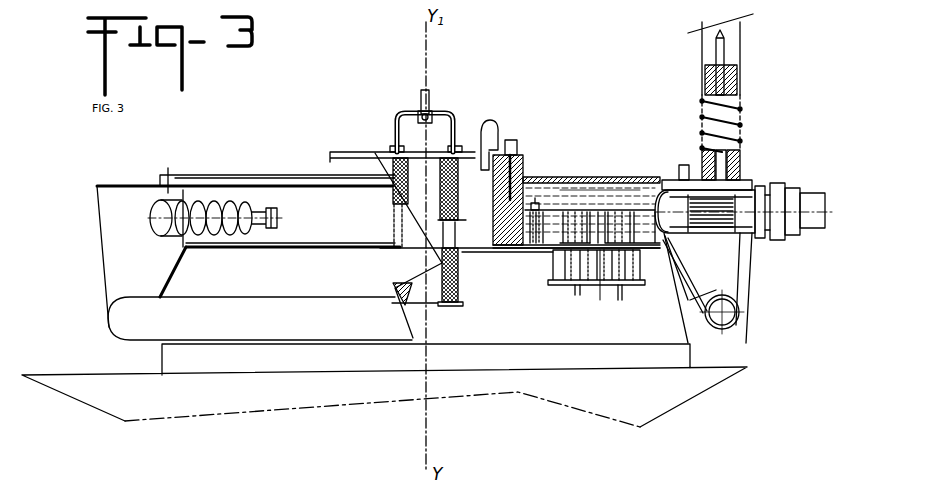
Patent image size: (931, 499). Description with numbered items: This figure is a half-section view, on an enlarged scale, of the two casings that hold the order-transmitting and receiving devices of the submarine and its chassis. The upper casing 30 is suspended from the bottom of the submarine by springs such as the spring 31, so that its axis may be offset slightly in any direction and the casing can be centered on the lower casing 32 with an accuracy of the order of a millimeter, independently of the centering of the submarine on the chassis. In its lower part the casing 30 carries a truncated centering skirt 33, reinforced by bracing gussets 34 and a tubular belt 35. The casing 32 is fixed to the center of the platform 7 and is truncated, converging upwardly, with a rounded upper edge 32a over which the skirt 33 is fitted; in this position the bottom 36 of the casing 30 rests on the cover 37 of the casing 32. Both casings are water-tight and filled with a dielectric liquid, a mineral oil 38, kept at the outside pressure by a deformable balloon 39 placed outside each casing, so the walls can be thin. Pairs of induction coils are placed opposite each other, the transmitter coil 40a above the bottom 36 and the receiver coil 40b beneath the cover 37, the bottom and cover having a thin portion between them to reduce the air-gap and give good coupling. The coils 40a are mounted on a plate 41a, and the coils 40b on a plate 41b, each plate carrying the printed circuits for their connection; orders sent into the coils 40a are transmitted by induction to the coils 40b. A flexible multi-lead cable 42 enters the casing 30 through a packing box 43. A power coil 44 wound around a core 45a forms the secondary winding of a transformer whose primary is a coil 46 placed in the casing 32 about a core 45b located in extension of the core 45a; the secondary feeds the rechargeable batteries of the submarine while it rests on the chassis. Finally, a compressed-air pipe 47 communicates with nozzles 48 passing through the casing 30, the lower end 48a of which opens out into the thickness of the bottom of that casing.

The platform 7 is at (58, 372).
The casing 30 is at (597, 242).
The spring 31 is at (742, 128).
The casing 32 is at (523, 340).
The upper edge 32a is at (662, 244).
The centering skirt 33 is at (690, 283).
The bracing gussets 34 is at (728, 267).
The tubular belt 35 is at (738, 320).
The bottom 36 is at (628, 188).
The cover 37 is at (602, 270).
The mineral oil 38 is at (598, 190).
The deformable balloon 39 is at (160, 223).
The induction coil 40a is at (574, 210).
The induction coil 40b is at (560, 262).
The plate 41a is at (545, 203).
The plate 41b is at (580, 283).
The flexible multi-lead cable 42 is at (815, 200).
The packing box 43 is at (778, 185).
The power coil 44 is at (478, 152).
The core 45a is at (380, 172).
The core 45b is at (420, 300).
The coil 46 is at (460, 292).
The pipe 47 is at (422, 94).
The nozzles 48 is at (397, 130).
The lower end 48a is at (400, 250).